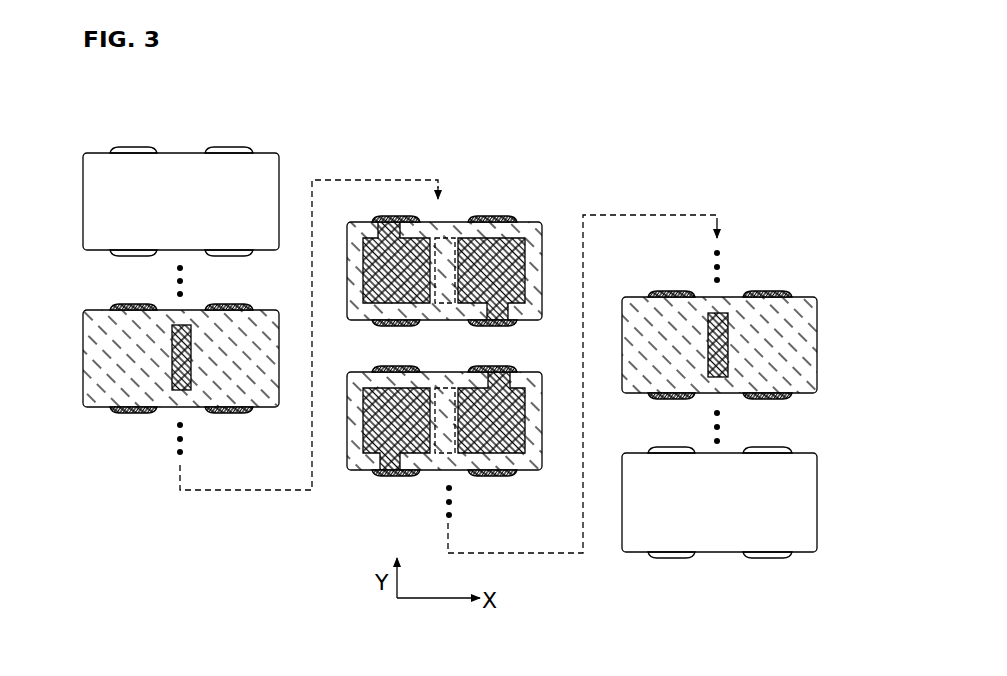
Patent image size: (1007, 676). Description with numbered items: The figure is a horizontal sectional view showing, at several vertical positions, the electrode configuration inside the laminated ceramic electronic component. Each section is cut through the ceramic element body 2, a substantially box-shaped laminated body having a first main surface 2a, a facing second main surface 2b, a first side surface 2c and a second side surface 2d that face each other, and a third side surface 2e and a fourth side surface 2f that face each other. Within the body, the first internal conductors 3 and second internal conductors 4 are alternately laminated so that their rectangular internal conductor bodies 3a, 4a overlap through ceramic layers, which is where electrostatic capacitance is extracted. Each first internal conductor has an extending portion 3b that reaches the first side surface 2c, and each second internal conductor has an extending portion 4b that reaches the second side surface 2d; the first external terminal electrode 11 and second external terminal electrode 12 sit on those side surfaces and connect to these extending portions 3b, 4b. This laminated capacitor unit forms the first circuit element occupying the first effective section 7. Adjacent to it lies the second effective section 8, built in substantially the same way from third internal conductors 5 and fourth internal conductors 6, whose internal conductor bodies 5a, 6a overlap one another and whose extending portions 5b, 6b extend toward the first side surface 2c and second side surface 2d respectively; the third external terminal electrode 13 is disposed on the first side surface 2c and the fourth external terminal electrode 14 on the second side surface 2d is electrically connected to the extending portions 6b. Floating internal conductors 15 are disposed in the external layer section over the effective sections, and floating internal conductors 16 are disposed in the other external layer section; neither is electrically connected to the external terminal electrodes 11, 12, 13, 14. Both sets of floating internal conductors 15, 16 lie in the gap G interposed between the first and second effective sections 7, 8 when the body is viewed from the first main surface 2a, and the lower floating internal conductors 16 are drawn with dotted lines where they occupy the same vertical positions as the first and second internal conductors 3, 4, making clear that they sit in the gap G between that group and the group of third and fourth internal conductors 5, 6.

The ceramic element body 2 is at (81, 200).
The first main surface 2a is at (181, 165).
The second main surface 2b is at (803, 470).
The first side surface 2c is at (196, 150).
The second side surface 2d is at (192, 250).
The third side surface 2e is at (83, 175).
The fourth side surface 2f is at (280, 170).
The first internal conductor 3 is at (386, 200).
The internal conductor body 3a is at (360, 282).
The extending portion 3b is at (364, 237).
The second internal conductor 4 is at (349, 489).
The internal conductor body 4a is at (363, 437).
The extending portion 4b is at (380, 462).
The third internal conductor 5 is at (517, 456).
The internal conductor body 5a is at (527, 440).
The extending portion 5b is at (510, 377).
The fourth internal conductor 6 is at (552, 225).
The internal conductor body 6a is at (530, 243).
The extending portion 6b is at (508, 318).
The first effective section 7 is at (363, 268).
The second effective section 8 is at (527, 236).
The first external terminal electrode 11 is at (128, 147).
The second external terminal electrode 12 is at (127, 257).
The third external terminal electrode 13 is at (228, 147).
The fourth external terminal electrode 14 is at (233, 258).
The floating internal conductor 15 is at (178, 390).
The floating internal conductor 16 is at (720, 312).
The gap G is at (442, 233).